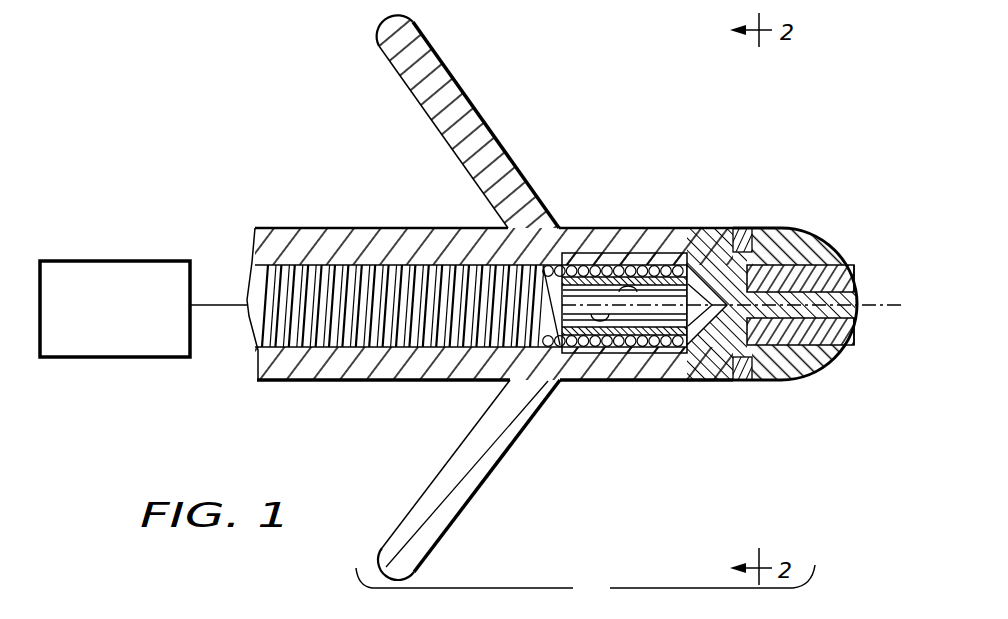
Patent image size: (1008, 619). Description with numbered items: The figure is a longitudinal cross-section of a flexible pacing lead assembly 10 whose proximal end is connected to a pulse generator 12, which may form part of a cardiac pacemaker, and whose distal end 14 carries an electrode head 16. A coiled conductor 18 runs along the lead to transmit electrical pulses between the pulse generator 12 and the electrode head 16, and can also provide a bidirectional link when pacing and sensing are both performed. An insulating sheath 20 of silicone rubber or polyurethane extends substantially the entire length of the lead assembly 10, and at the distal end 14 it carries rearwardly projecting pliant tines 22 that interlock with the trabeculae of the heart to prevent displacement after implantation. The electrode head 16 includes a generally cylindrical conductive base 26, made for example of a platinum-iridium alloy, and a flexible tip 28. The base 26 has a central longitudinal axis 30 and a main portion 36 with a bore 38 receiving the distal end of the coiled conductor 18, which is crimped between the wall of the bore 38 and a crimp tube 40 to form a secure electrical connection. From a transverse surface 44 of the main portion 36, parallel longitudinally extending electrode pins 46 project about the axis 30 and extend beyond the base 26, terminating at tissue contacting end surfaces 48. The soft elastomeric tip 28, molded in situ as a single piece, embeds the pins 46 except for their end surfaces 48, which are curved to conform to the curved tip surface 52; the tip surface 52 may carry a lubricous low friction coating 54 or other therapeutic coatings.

The lead assembly 10 is at (297, 146).
The pulse generator 12 is at (108, 260).
The distal end 14 is at (585, 583).
The electrode head 16 is at (735, 230).
The coiled conductor 18 is at (400, 263).
The insulating sheath 20 is at (318, 383).
The tines 22 is at (437, 57).
The base 26 is at (750, 252).
The flexible tip 28 is at (790, 242).
The longitudinal axis 30 is at (858, 305).
The main portion 36 is at (639, 360).
The bore 38 is at (615, 268).
The crimp tube 40 is at (608, 352).
The transverse surface 44 is at (760, 350).
The electrode pins 46 is at (826, 264).
The tissue contacting end surfaces 48 is at (853, 280).
The tip surface 52 is at (858, 297).
The low friction coating 54 is at (852, 352).